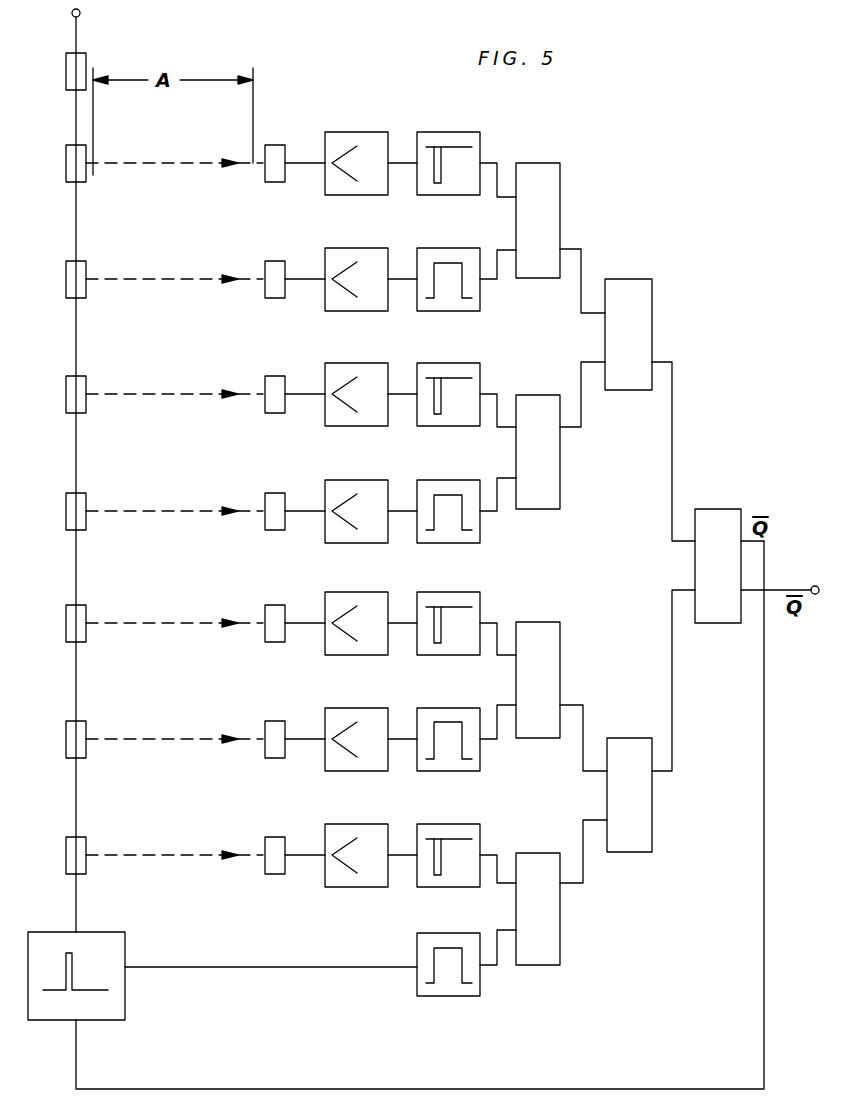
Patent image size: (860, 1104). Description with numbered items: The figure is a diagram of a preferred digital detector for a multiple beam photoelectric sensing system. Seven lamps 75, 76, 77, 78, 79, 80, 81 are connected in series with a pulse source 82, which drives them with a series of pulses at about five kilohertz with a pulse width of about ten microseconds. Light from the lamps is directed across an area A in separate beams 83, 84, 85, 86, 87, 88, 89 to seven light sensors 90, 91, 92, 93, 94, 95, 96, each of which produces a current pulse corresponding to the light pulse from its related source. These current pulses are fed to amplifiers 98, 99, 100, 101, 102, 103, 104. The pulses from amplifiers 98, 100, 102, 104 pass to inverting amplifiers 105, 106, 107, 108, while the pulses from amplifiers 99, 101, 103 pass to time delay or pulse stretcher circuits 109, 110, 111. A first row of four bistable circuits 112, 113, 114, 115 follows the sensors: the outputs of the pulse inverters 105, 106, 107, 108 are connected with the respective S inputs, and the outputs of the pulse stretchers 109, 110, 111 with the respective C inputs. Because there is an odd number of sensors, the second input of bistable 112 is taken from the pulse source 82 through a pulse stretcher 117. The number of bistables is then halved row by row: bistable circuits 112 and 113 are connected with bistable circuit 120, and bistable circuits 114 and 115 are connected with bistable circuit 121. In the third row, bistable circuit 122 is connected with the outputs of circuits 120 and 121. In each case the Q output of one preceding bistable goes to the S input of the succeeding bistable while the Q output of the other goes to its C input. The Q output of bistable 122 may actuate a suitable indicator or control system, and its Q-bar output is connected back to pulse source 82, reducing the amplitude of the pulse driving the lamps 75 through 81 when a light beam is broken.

The lamp 75 is at (68, 858).
The lamp 76 is at (54, 750).
The lamp 77 is at (68, 624).
The lamp 78 is at (68, 512).
The lamp 79 is at (68, 396).
The lamp 80 is at (68, 282).
The lamp 81 is at (68, 168).
The pulse source 82 is at (48, 1024).
The light beam 83 is at (150, 858).
The light beam 84 is at (150, 742).
The light beam 85 is at (150, 626).
The light beam 86 is at (150, 514).
The light beam 87 is at (150, 397).
The light beam 88 is at (150, 282).
The light beam 89 is at (150, 166).
The light sensor 90 is at (272, 866).
The light sensor 91 is at (270, 750).
The light sensor 92 is at (268, 640).
The light sensor 93 is at (268, 524).
The light sensor 94 is at (270, 410).
The light sensor 95 is at (270, 294).
The light sensor 96 is at (272, 180).
The amplifier 98 is at (348, 887).
The amplifier 99 is at (348, 771).
The amplifier 100 is at (348, 655).
The amplifier 101 is at (348, 543).
The amplifier 102 is at (348, 426).
The amplifier 103 is at (348, 311).
The amplifier 104 is at (348, 196).
The inverting amplifier 105 is at (438, 887).
The inverting amplifier 106 is at (436, 655).
The inverting amplifier 107 is at (436, 426).
The inverting amplifier 108 is at (436, 196).
The pulse stretcher circuit 109 is at (438, 771).
The pulse stretcher circuit 110 is at (436, 543).
The pulse stretcher circuit 111 is at (436, 311).
The pulse stretcher 117 is at (438, 996).
The bistable circuit 112 is at (534, 966).
The bistable circuit 113 is at (534, 739).
The bistable circuit 114 is at (532, 510).
The bistable circuit 115 is at (532, 279).
The bistable circuit 120 is at (626, 853).
The bistable circuit 121 is at (626, 391).
The bistable circuit 122 is at (718, 624).